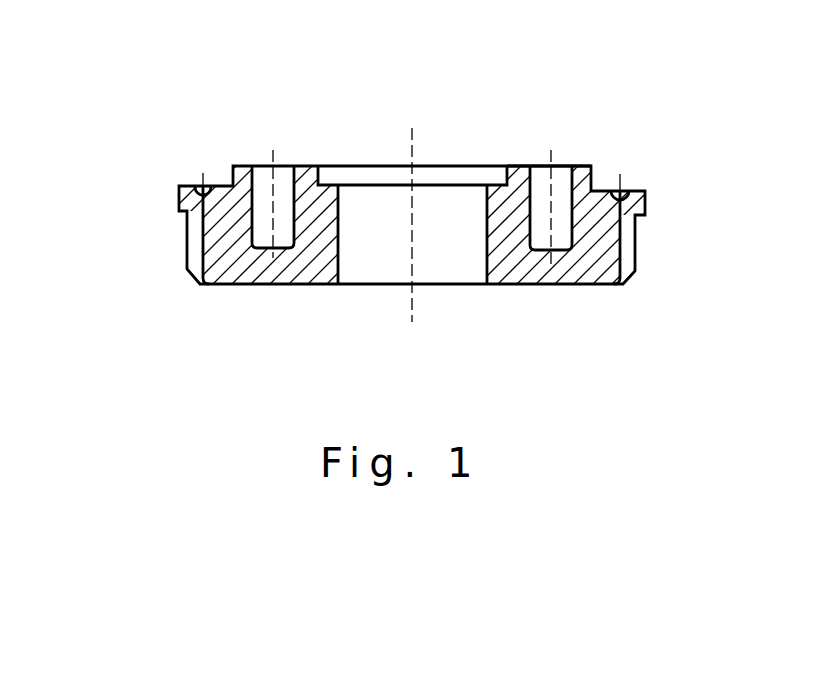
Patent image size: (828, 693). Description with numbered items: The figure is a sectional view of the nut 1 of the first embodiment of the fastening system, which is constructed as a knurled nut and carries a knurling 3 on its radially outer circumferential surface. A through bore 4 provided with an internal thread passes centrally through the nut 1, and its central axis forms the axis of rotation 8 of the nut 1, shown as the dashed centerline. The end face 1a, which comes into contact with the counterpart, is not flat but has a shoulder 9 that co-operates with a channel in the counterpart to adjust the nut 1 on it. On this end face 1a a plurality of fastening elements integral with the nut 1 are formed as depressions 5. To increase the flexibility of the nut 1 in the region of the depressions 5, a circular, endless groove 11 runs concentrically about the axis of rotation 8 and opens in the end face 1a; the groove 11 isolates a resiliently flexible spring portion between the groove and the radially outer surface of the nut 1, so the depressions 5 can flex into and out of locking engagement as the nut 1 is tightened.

The nut 1 is at (136, 333).
The end face 1a is at (567, 152).
The knurling 3 is at (192, 243).
The through bore 4 is at (467, 242).
The depressions 5 is at (610, 173).
The axis of rotation 8 is at (411, 235).
The shoulder 9 is at (303, 194).
The groove 11 is at (546, 200).